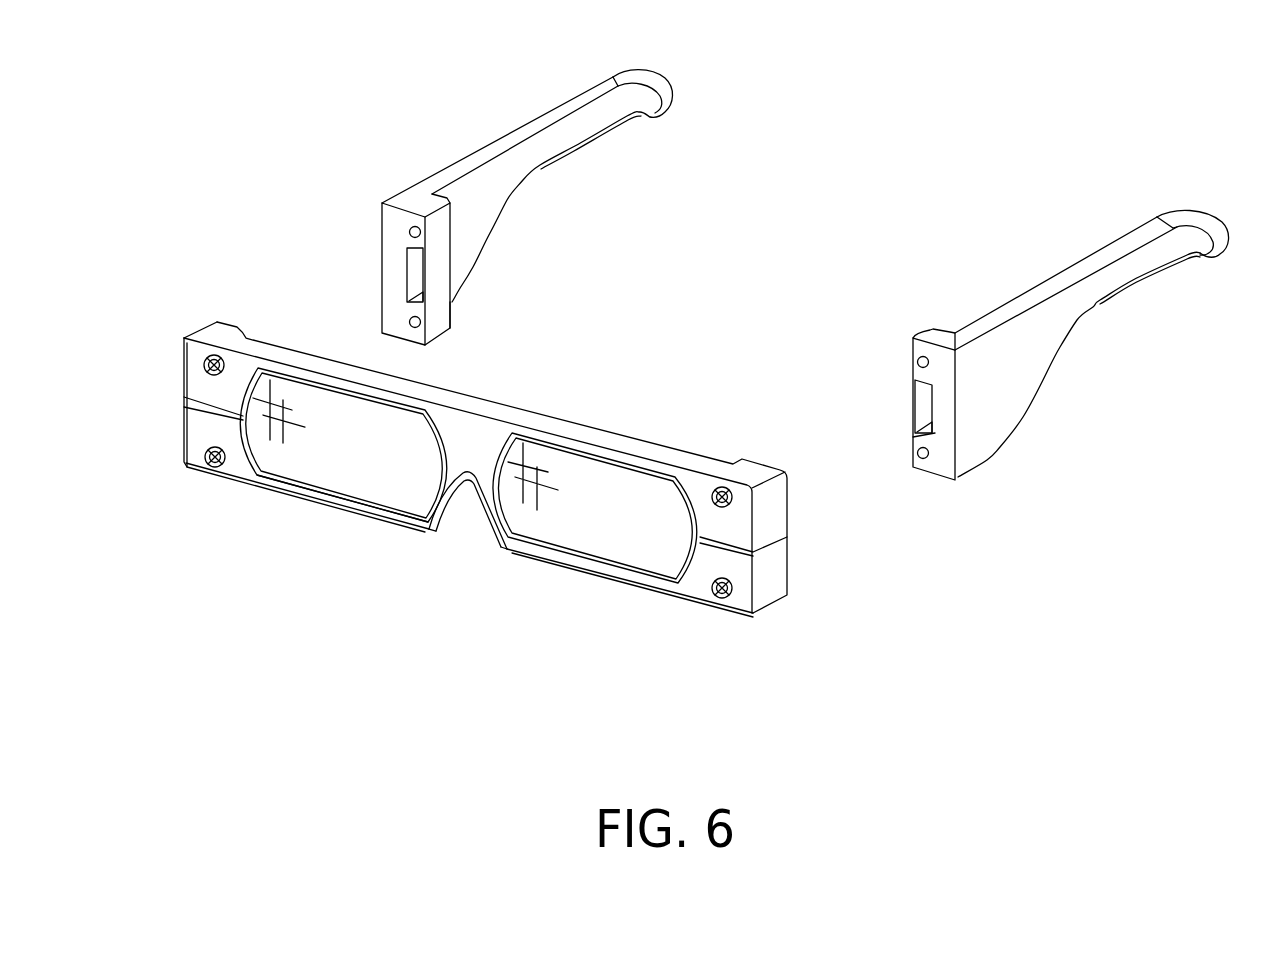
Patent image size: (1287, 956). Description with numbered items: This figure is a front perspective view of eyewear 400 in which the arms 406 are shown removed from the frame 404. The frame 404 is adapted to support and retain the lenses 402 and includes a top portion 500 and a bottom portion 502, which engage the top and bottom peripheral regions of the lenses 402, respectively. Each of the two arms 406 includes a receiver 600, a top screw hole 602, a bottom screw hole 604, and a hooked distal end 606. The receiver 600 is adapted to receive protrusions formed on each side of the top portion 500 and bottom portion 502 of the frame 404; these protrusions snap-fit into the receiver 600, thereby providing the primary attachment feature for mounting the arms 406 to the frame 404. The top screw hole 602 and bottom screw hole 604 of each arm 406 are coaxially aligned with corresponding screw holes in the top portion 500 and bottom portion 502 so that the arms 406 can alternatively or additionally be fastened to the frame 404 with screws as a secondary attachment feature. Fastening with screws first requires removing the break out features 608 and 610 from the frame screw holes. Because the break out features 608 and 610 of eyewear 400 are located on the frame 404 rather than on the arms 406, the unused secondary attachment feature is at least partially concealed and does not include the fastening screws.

The eyewear 400 is at (214, 134).
The lenses 402 is at (372, 437).
The frame 404 is at (473, 453).
The arms 406 is at (473, 247).
The top portion 500 is at (495, 410).
The bottom portion 502 is at (323, 500).
The receiver 600 is at (410, 275).
The top screw hole 602 is at (410, 232).
The bottom screw hole 604 is at (410, 323).
The hooked distal end 606 is at (647, 102).
The break out feature 608 is at (205, 368).
The break out feature 610 is at (205, 462).